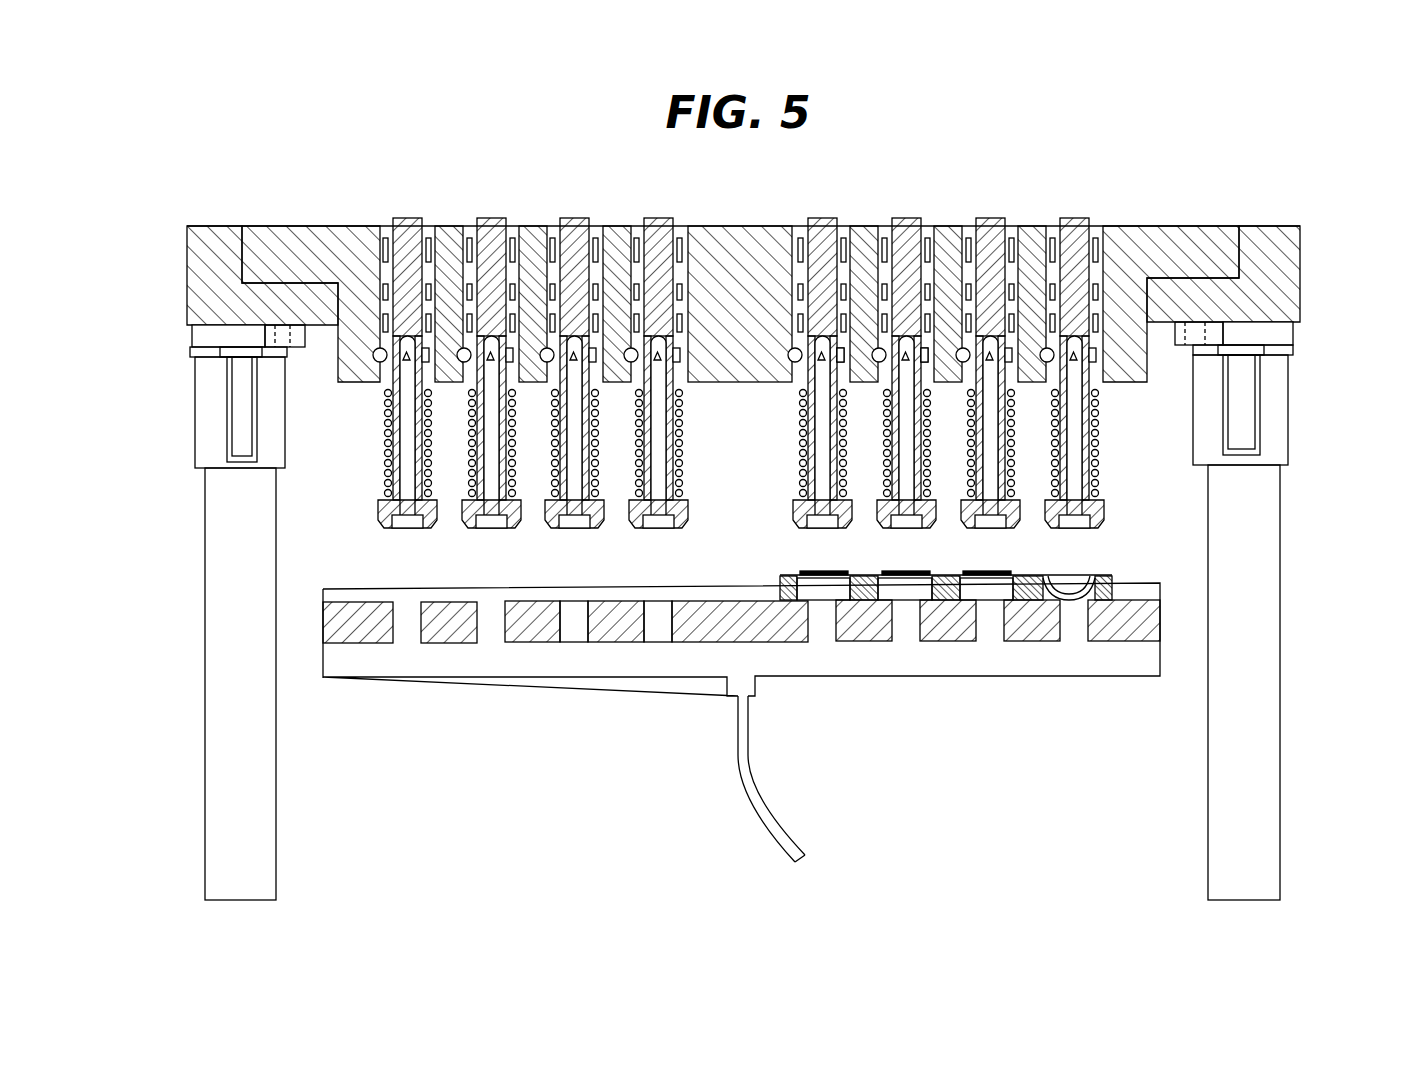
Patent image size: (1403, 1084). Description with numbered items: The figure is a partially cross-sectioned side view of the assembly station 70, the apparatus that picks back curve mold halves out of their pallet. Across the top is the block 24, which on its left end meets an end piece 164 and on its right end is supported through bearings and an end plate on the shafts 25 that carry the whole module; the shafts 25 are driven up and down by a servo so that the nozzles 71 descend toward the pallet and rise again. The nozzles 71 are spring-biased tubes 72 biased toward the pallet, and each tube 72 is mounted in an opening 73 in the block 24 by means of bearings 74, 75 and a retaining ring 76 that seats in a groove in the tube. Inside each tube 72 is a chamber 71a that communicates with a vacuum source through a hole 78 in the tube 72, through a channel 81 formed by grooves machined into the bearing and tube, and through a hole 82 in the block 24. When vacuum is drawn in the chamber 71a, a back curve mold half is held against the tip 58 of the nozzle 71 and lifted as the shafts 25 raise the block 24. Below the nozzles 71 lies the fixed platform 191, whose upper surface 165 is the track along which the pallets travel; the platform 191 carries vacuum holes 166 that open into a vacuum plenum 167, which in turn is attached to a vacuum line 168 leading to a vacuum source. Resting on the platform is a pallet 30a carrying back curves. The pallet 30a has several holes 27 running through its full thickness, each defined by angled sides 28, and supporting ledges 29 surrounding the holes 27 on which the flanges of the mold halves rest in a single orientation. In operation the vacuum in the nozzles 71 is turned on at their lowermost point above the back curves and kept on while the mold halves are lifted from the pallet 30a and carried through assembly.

The assembly station 70 is at (1312, 192).
The end block 164 is at (207, 228).
The block 24 is at (313, 228).
The openings 73 is at (538, 228).
The retaining ring 76 is at (805, 226).
The tubes 72 is at (905, 228).
The bearing 74 is at (1050, 230).
The nozzles 71 is at (1080, 216).
The bearing 75 is at (1105, 305).
The hole 78 is at (825, 352).
The channel 81 is at (843, 358).
The hole 82 is at (930, 356).
The chamber 71a is at (570, 430).
The tip 58 is at (650, 512).
The pallet 30a is at (988, 627).
The shafts 25 is at (228, 693).
The fixed platform 191 is at (322, 635).
The surface 165 is at (362, 606).
The vacuum holes 166 is at (657, 630).
The vacuum plenum 167 is at (825, 655).
The vacuum line 168 is at (752, 790).
The angled sides 28 is at (937, 590).
The holes 27 is at (990, 587).
The supporting ledges 29 is at (1105, 590).